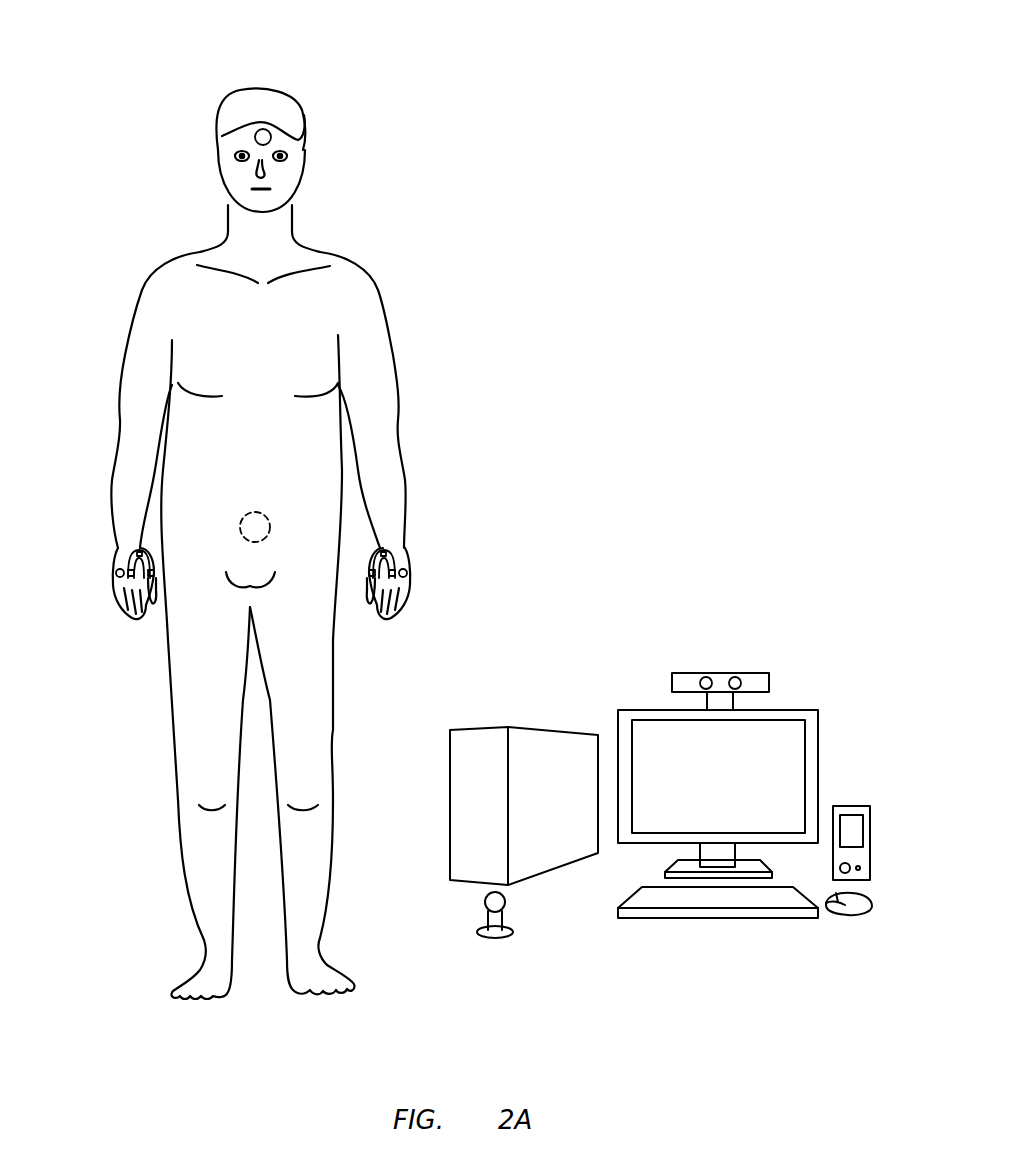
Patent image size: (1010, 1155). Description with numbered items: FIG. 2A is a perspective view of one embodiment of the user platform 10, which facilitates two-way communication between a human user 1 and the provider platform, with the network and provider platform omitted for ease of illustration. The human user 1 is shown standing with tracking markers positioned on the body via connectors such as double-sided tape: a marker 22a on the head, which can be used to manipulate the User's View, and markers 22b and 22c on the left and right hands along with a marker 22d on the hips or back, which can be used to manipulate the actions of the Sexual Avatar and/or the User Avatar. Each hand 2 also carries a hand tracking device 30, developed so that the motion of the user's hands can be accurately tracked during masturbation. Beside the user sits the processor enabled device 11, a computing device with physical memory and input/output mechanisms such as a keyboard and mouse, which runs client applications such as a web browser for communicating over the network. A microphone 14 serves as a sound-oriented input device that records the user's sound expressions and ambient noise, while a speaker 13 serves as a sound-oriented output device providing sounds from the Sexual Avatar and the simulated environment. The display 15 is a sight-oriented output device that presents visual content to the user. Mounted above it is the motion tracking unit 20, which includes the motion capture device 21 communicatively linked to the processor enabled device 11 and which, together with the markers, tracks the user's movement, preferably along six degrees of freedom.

The user platform 10 is at (178, 70).
The human user 1 is at (268, 396).
The hand 2 is at (113, 597).
The hand tracking device 30 is at (132, 556).
The marker 22a is at (270, 131).
The marker 22b is at (116, 573).
The marker 22c is at (408, 565).
The marker 22d is at (258, 512).
The processor enabled device 11 is at (497, 728).
The microphone 14 is at (485, 915).
The motion tracking unit 20 is at (658, 687).
The motion capture device 21 is at (735, 677).
The display 15 is at (798, 722).
The speaker 13 is at (852, 806).